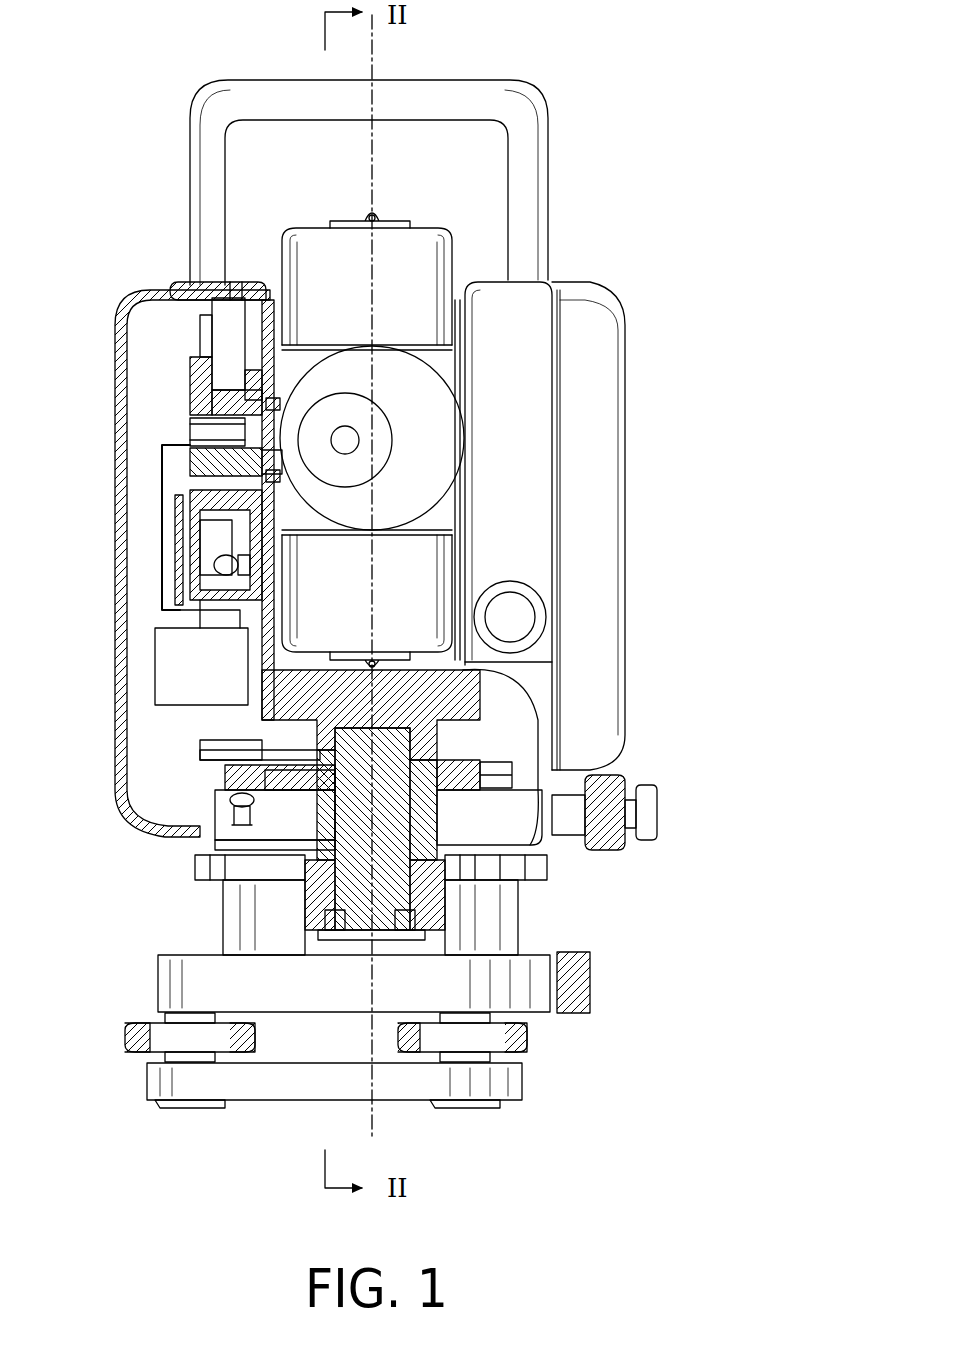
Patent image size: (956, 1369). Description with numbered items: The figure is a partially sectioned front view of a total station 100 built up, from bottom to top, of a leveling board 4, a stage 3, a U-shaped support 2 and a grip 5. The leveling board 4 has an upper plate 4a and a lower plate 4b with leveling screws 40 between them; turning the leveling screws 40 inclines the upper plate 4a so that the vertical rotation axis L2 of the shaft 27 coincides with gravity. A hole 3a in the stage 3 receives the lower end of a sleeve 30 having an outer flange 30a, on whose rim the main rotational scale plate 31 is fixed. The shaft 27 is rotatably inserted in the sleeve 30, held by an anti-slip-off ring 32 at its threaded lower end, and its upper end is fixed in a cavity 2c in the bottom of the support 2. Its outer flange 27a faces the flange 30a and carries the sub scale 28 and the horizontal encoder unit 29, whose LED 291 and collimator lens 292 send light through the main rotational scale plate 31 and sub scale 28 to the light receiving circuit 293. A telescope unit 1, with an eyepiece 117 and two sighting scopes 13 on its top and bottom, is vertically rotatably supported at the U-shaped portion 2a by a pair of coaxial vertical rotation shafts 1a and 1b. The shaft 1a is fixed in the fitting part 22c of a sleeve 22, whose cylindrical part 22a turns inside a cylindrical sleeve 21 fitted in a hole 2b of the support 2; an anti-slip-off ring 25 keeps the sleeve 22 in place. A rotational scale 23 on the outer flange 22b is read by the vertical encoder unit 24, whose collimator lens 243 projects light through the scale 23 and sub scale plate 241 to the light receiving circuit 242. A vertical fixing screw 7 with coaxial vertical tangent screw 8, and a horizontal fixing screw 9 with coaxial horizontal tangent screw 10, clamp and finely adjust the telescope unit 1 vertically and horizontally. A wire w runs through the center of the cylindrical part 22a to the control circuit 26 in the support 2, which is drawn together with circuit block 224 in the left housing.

The total station 100 is at (638, 74).
The telescope unit 1 is at (425, 228).
The vertical rotation shaft 1a is at (262, 458).
The vertical rotation shaft 1b is at (462, 390).
The U-shaped support 2 is at (585, 300).
The U-shaped portion 2a is at (280, 292).
The hole 2b is at (272, 398).
The cavity 2c is at (422, 660).
The stage 3 is at (510, 912).
The hole 3a is at (425, 940).
The leveling board 4 is at (100, 945).
The upper plate 4a is at (165, 985).
The lower plate 4b is at (170, 1085).
The grip 5 is at (438, 92).
The vertical fixing screw 7 is at (500, 592).
The vertical tangent screw 8 is at (520, 585).
The horizontal fixing screw 9 is at (658, 822).
The horizontal tangent screw 10 is at (600, 852).
The sighting scope 13 is at (362, 218).
The cylindrical sleeve 21 is at (250, 382).
The sleeve 22 is at (155, 324).
The cylindrical part 22a is at (195, 425).
The outer flange 22b is at (200, 398).
The fitting part 22c is at (285, 406).
The rotational scale 23 is at (185, 292).
The vertical encoder unit 24 is at (200, 560).
The anti-slip-off ring 25 is at (285, 480).
The control circuit 26 is at (155, 690).
The shaft 27 is at (325, 880).
The outer flange 27a is at (300, 748).
The sub scale 28 is at (225, 765).
The horizontal encoder unit 29 is at (225, 785).
The sleeve 30 is at (480, 795).
The outer flange 30a is at (545, 800).
The main rotational scale plate 31 is at (270, 790).
The anti-slip-off ring 32 is at (335, 940).
The leveling screw 40 is at (240, 1035).
The eyepiece 117 is at (355, 440).
The drive circuit 224 is at (201, 666).
The sub scale plate 241 is at (200, 560).
The light receiving circuit 242 is at (175, 535).
The collimator lens 243 is at (232, 578).
The LED 291 is at (215, 848).
The collimator lens 292 is at (230, 815).
The light receiving circuit 293 is at (225, 745).
The wire w is at (160, 510).
The vertical rotation axis L2 is at (385, 1112).